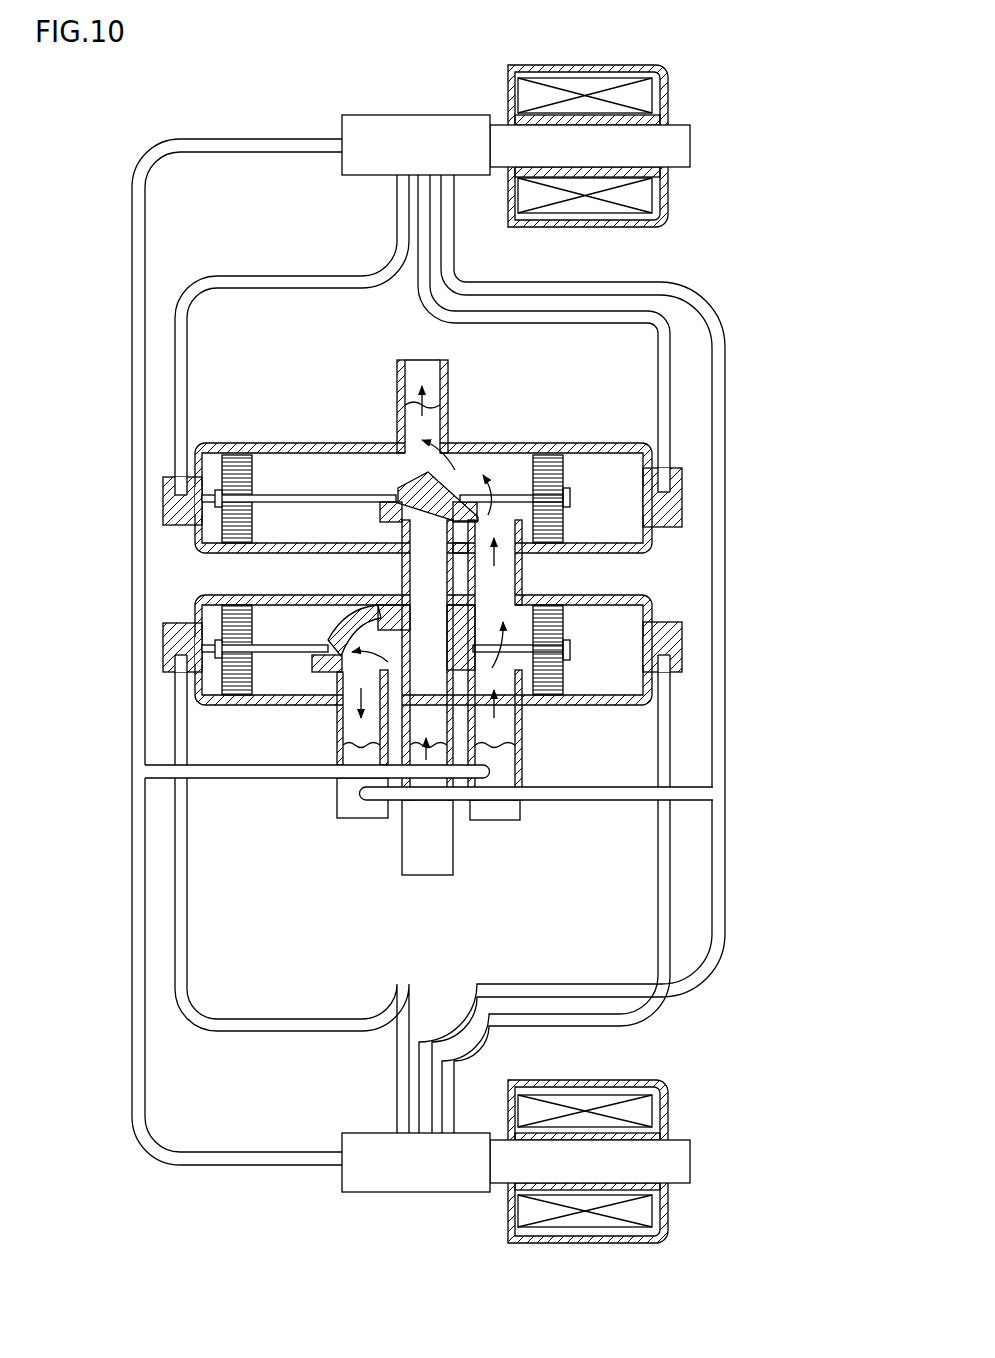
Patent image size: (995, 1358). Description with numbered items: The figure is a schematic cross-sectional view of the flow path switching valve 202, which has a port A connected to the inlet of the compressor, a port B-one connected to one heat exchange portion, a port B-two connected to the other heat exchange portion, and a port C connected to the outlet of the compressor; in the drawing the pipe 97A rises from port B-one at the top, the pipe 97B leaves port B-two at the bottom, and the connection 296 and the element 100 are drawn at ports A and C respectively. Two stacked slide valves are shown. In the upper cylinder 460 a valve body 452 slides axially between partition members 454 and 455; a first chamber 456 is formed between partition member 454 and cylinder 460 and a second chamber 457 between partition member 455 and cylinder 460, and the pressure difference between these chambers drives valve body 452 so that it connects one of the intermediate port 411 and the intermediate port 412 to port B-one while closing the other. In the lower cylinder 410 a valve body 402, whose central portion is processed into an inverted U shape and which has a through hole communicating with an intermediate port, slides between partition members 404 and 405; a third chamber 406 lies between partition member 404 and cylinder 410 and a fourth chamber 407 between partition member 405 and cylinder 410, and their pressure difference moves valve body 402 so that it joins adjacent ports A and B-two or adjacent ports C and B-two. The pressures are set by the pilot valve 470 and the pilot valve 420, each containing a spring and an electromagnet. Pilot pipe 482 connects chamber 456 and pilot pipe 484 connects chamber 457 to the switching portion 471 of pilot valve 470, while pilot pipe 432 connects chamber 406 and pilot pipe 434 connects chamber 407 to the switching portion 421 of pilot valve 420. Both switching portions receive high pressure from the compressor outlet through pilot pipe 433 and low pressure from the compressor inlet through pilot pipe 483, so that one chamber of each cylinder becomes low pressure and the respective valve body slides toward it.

The flow path switching valve 202 is at (176, 81).
The switching portion 471 is at (342, 123).
The pilot valve 470 is at (682, 78).
The switching portion 421 is at (342, 1134).
The pilot valve 420 is at (682, 1232).
The pilot pipe 484 is at (188, 373).
The pilot pipe 482 is at (657, 365).
The pilot pipe 483 is at (726, 762).
The pilot pipe 433 is at (132, 745).
The pilot pipe 434 is at (188, 812).
The pilot pipe 432 is at (657, 765).
The cylinder 460 is at (422, 447).
The first pipe B1 97A is at (449, 387).
The second chamber 457 is at (210, 468).
The partition member 455 is at (236, 455).
The valve body 452 is at (415, 493).
The partition member 454 is at (549, 455).
The first chamber 456 is at (606, 468).
The fourth chamber 407 is at (210, 600).
The valve body 402 is at (340, 605).
The intermediate port 411 is at (401, 572).
The intermediate port 412 is at (523, 572).
The third chamber 406 is at (612, 603).
The partition member 405 is at (238, 690).
The cylinder 410 is at (312, 705).
The partition member 404 is at (548, 700).
The port A pipe 296 is at (337, 805).
The flow path switching valve 100 is at (520, 806).
The second pipe B2 97B is at (454, 868).